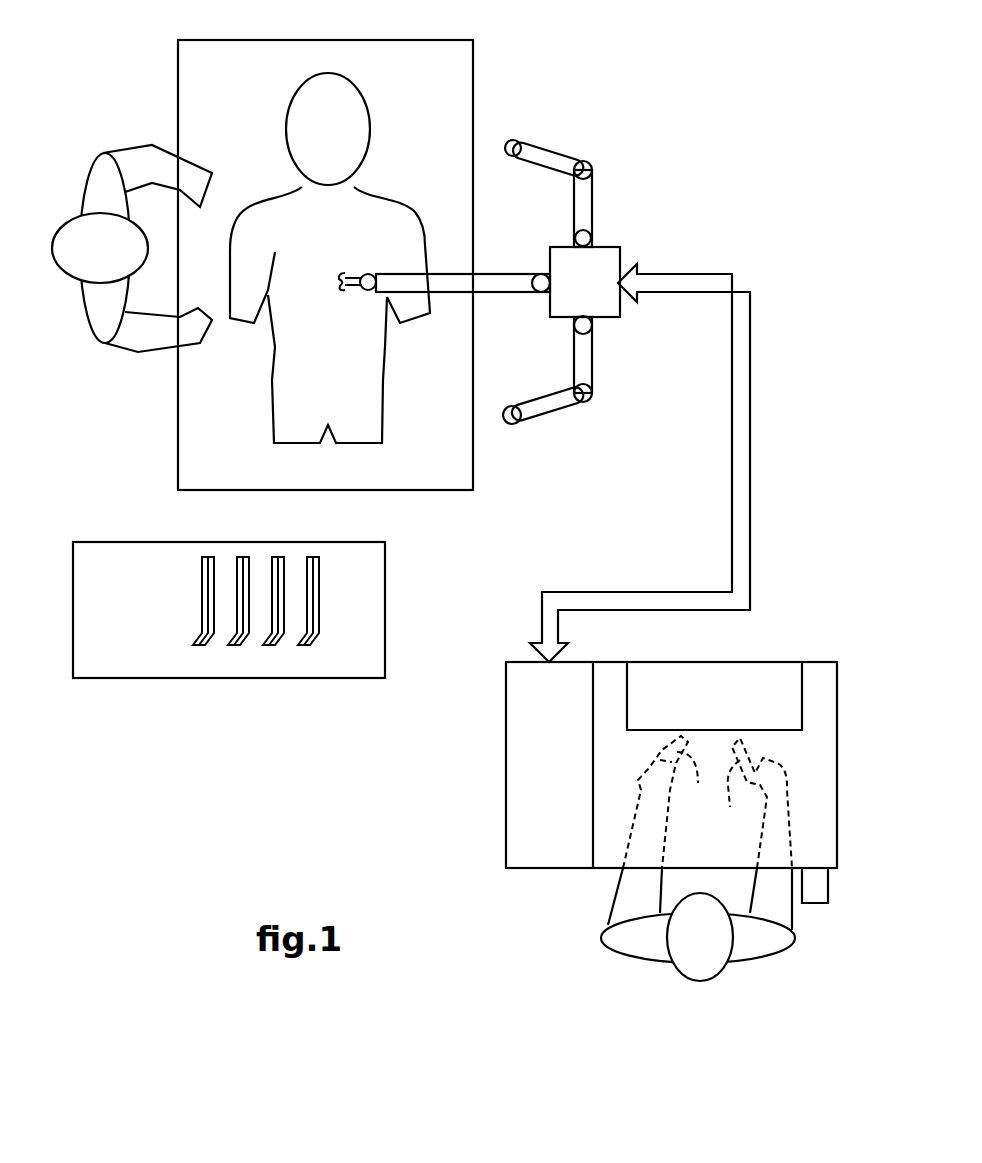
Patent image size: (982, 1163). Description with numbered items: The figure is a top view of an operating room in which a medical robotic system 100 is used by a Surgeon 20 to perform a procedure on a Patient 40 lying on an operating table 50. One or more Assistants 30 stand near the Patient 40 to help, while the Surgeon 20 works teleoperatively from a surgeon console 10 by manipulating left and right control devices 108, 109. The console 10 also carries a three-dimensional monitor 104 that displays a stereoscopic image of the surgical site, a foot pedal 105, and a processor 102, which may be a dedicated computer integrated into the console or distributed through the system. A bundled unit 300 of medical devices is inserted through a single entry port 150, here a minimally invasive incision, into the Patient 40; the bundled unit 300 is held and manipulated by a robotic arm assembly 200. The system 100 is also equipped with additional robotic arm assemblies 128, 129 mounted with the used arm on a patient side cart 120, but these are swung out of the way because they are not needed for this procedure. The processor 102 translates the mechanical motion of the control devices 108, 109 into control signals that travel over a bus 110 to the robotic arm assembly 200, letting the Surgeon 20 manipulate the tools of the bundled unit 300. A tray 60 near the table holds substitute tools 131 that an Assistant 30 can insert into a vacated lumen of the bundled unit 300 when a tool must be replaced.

The surgeon console 10 is at (812, 658).
The Surgeon 20 is at (753, 960).
The Assistant 30 is at (81, 310).
The Patient 40 is at (273, 192).
The operating table 50 is at (403, 40).
The tray 60 is at (108, 542).
The medical robotic system 100 is at (666, 125).
The processor 102 is at (535, 775).
The 3-D monitor 104 is at (699, 705).
The foot pedal 105 is at (820, 903).
The left control device 108 is at (667, 802).
The right control device 109 is at (752, 803).
The bus 110 is at (730, 545).
The patient side cart 120 is at (571, 292).
The additional robotic arm assembly 128 is at (553, 435).
The additional robotic arm assembly 129 is at (542, 126).
The substitute tool 131 is at (192, 607).
The entry port 150 is at (330, 281).
The robotic arm assembly 200 is at (491, 262).
The bundled unit 300 is at (353, 270).